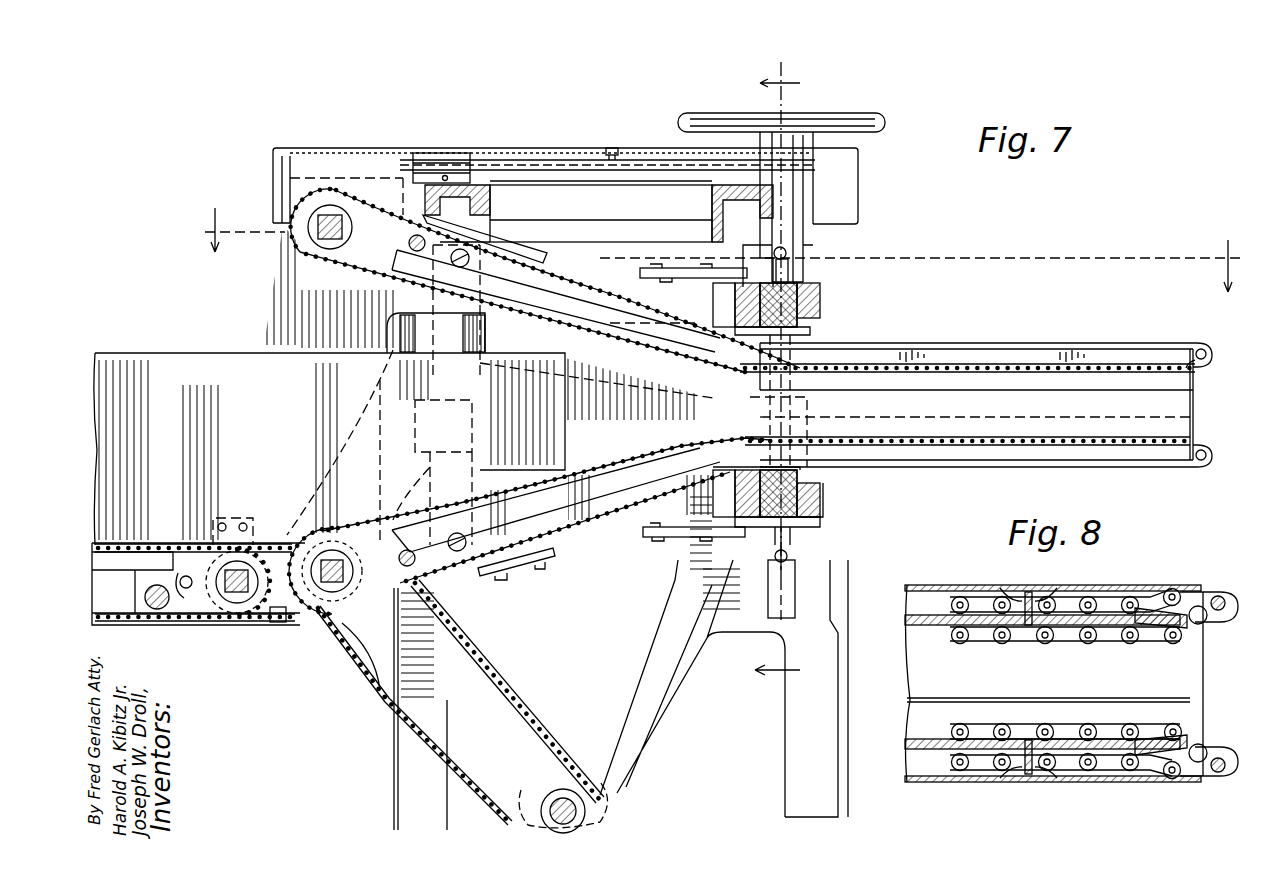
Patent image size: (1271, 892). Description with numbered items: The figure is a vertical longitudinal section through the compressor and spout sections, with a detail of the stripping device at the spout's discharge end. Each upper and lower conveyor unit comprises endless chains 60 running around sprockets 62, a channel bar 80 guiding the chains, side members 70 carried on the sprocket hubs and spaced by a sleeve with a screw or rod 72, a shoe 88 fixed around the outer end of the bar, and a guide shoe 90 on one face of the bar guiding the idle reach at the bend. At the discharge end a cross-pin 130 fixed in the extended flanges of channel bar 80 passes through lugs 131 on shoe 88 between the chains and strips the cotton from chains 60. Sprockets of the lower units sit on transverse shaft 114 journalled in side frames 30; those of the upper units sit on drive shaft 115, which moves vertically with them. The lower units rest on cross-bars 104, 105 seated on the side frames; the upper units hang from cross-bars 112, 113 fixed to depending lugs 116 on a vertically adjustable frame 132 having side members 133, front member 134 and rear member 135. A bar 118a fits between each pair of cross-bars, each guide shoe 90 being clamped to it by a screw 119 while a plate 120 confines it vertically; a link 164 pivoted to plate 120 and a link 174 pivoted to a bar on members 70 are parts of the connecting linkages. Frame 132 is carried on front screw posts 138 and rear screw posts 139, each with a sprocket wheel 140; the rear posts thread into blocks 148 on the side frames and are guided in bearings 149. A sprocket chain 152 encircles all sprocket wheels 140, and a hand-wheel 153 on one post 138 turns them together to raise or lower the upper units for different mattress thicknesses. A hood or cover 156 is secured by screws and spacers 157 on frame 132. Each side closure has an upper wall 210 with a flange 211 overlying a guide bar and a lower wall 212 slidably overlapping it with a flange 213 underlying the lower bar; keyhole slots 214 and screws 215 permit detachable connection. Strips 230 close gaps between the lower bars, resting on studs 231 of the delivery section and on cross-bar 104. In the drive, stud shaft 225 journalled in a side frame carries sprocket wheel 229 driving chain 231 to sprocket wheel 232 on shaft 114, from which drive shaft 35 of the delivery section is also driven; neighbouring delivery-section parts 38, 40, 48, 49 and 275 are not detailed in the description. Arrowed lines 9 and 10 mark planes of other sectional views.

In FIG. 7, the section line 9- 9 is at (719, 265).
In FIG. 7, the section line 10-10 / machine 10 is at (791, 368).
In FIG. 7, the frame 30 is at (394, 752).
In FIG. 7, the sprocket 35 is at (236, 596).
In FIG. 7, the lever 38 is at (205, 590).
In FIG. 7, the conveyor 40 is at (198, 584).
In FIG. 7, the plate 48 is at (178, 358).
In FIG. 7, the bracket 49 is at (238, 518).
In FIG. 7, the chain 60 is at (605, 290).
In FIG. 8, the chain 60 is at (1070, 643).
In FIG. 7, the shaft 62 is at (318, 262).
In FIG. 7, the pulley 70 is at (308, 250).
In FIG. 7, the screw 72 is at (404, 238).
In FIG. 7, the conveyor frame 80 is at (927, 342).
In FIG. 8, the guide 88 is at (1163, 622).
In FIG. 7, the plate 90 is at (812, 332).
In FIG. 7, the block 104 is at (822, 500).
In FIG. 7, the block 105 is at (822, 516).
In FIG. 7, the block 112 is at (822, 315).
In FIG. 7, the block 113 is at (822, 290).
In FIG. 7, the sprocket 114 is at (330, 592).
In FIG. 7, the support 115 is at (330, 265).
In FIG. 7, the bracket 116 is at (730, 262).
In FIG. 7, the bushing 118a is at (822, 303).
In FIG. 7, the pin 119 is at (792, 251).
In FIG. 7, the rod 120 is at (790, 270).
In FIG. 7, the pin 130 is at (1212, 352).
In FIG. 8, the pin 130 is at (1225, 595).
In FIG. 7, the roller 131 is at (1212, 360).
In FIG. 8, the roller 131 is at (1222, 624).
In FIG. 7, the bar 132 is at (570, 171).
In FIG. 7, the carriage 133 is at (576, 213).
In FIG. 7, the bracket 134 is at (705, 185).
In FIG. 7, the clamp 135 is at (476, 186).
In FIG. 7, the rod 138 is at (768, 605).
In FIG. 7, the link 139 is at (382, 462).
In FIG. 7, the block 140 is at (452, 153).
In FIG. 7, the housing 148 is at (480, 437).
In FIG. 7, the post 149 is at (597, 356).
In FIG. 7, the rail 152 is at (415, 160).
In FIG. 7, the handle 153 is at (852, 114).
In FIG. 7, the housing 156 is at (272, 165).
In FIG. 7, the screw 157 is at (613, 148).
In FIG. 7, the plate 164 is at (665, 538).
In FIG. 7, the plate 174 is at (540, 252).
In FIG. 7, the guide 210 is at (990, 352).
In FIG. 8, the cover plate 211 is at (1135, 585).
In FIG. 7, the wall 212 is at (1030, 395).
In FIG. 8, the bottom plate 213 is at (1070, 782).
In FIG. 8, the clip 214 is at (1050, 593).
In FIG. 8, the pin 215 is at (1032, 592).
In FIG. 7, the shaft 225 is at (580, 808).
In FIG. 7, the sprocket 229 is at (555, 780).
In FIG. 7, the strip 230 is at (222, 546).
In FIG. 7, the chain 231 is at (190, 598).
In FIG. 7, the chain 232 is at (352, 608).
In FIG. 7, the shaft 275 is at (144, 598).